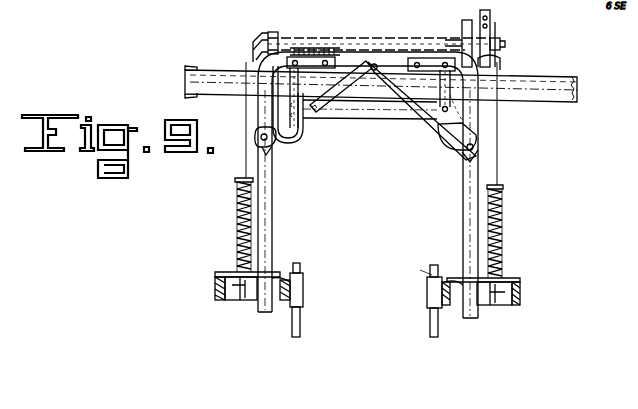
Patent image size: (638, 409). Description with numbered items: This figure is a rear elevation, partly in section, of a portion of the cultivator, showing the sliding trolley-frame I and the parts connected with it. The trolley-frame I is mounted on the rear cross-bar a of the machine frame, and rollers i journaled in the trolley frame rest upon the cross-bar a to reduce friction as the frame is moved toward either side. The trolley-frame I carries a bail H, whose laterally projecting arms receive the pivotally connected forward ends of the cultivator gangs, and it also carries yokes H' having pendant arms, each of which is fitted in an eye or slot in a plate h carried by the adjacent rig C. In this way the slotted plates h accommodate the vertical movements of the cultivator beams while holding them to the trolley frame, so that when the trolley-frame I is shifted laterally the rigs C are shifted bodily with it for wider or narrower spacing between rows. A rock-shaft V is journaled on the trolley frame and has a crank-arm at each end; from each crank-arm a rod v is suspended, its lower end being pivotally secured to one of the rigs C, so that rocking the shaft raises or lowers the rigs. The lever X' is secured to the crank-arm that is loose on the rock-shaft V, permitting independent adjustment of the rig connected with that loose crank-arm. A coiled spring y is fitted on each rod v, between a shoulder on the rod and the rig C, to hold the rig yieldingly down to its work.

The rear cross-bar a is at (528, 92).
The rock-shaft V is at (320, 44).
The rollers i is at (287, 38).
The lever X' is at (501, 40).
The yokes H' is at (394, 185).
The bail H is at (370, 122).
The sliding trolley-frame I is at (393, 106).
The rod v is at (246, 157).
The coiled spring y is at (238, 206).
The rig C is at (365, 300).
The plate h is at (468, 278).